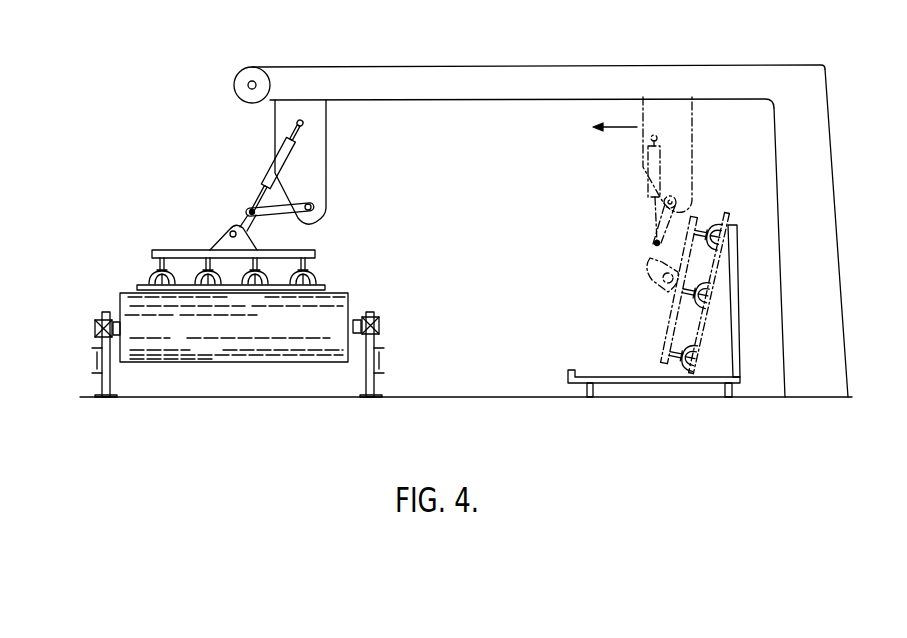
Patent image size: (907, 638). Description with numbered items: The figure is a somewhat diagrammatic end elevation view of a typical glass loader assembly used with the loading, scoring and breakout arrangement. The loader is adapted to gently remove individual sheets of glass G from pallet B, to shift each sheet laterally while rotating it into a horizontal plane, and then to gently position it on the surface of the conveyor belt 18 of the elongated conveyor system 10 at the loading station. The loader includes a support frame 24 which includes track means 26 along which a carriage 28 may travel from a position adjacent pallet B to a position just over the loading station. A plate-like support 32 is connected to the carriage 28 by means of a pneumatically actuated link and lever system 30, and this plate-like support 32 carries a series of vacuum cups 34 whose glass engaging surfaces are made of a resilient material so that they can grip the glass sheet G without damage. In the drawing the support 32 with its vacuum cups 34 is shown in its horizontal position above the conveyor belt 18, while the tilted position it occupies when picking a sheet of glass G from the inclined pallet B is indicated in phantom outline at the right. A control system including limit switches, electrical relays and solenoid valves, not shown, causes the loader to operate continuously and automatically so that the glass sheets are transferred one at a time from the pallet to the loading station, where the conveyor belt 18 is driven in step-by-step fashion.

The conveyor system 10 is at (358, 297).
The conveyor belt 18 is at (222, 363).
The support frame 24 is at (827, 130).
The track means 26 is at (407, 102).
The carriage 28 is at (312, 147).
The link and lever system 30 is at (249, 211).
The plate-like support 32 is at (300, 248).
The vacuum cups 34 is at (155, 280).
The glass sheet G is at (323, 280).
The pallet B is at (755, 184).